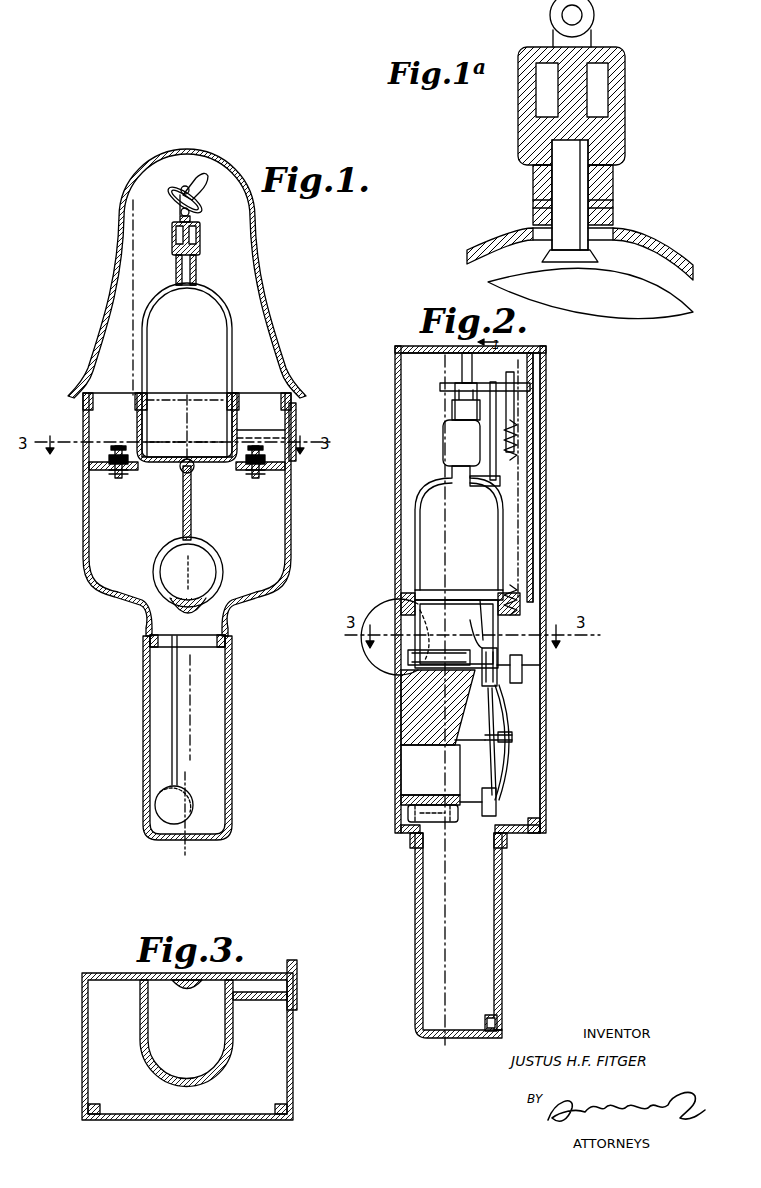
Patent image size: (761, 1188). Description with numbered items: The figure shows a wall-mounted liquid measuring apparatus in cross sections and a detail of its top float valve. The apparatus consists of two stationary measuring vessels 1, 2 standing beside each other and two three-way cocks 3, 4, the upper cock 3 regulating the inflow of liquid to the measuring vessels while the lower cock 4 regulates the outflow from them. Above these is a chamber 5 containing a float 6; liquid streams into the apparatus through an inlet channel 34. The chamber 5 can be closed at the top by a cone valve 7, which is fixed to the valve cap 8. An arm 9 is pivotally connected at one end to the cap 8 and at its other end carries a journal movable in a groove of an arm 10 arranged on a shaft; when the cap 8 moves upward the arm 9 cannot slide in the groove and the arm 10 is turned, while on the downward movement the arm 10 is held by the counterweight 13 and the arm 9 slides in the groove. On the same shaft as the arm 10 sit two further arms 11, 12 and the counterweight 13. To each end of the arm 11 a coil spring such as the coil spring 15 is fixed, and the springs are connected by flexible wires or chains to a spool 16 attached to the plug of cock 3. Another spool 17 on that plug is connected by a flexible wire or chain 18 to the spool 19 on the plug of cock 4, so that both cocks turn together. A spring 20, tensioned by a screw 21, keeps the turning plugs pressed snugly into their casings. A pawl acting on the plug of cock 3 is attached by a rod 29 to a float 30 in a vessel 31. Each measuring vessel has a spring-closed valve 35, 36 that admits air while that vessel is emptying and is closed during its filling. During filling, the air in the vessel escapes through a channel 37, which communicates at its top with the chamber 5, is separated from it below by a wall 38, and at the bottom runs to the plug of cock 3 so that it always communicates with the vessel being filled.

In FIG. 1, the measuring vessel 1 is at (187, 514).
In FIG. 2, the measuring vessel 1 is at (432, 1048).
In FIG. 1, the measuring vessel 2 is at (185, 185).
In FIG. 1, the three-way cock 3 is at (184, 462).
In FIG. 2, the three-way cock 3 is at (402, 680).
In FIG. 1, the three-way cock 4 is at (214, 600).
In FIG. 2, the three-way cock 4 is at (425, 808).
In FIG. 1, the chamber 5 is at (187, 427).
In FIG. 2, the chamber 5 is at (540, 606).
In FIG. 3, the chamber 5 is at (186, 1033).
In FIG. 1, the bottle 6 is at (187, 370).
In FIG. 1A, the bottle 6 is at (640, 300).
In FIG. 1, the cone valve 7 is at (196, 268).
In FIG. 1A, the cone valve 7 is at (555, 189).
In FIG. 1, the valve cap 8 is at (200, 240).
In FIG. 1A, the valve cap 8 is at (627, 100).
In FIG. 2, the valve cap 8 is at (443, 439).
In FIG. 1, the arm 9 is at (176, 204).
In FIG. 1, the arm 10 is at (199, 204).
In FIG. 2, the arm 11 is at (514, 400).
In FIG. 2, the arm 12 is at (514, 410).
In FIG. 1, the counterweight 13 is at (178, 190).
In FIG. 2, the counterweight 13 is at (462, 362).
In FIG. 2, the coil spring 15 is at (521, 436).
In FIG. 2, the spool 16 is at (524, 661).
In FIG. 2, the spool 17 is at (500, 652).
In FIG. 2, the flexible wire or chain 18 is at (492, 755).
In FIG. 2, the spool 19 is at (498, 806).
In FIG. 2, the spring 20 is at (505, 762).
In FIG. 2, the screw 21 is at (512, 739).
In FIG. 1, the rod 29 is at (178, 720).
In FIG. 1, the float 30 is at (180, 795).
In FIG. 1, the vessel 31 is at (233, 735).
In FIG. 2, the vessel 31 is at (503, 945).
In FIG. 1, the inlet channel 34 is at (266, 431).
In FIG. 3, the inlet channel 34 is at (297, 988).
In FIG. 1, the valve 35 is at (120, 478).
In FIG. 1, the valve 36 is at (255, 478).
In FIG. 2, the channel 37 is at (410, 634).
In FIG. 3, the channel 37 is at (180, 989).
In FIG. 2, the wall 38 is at (402, 621).